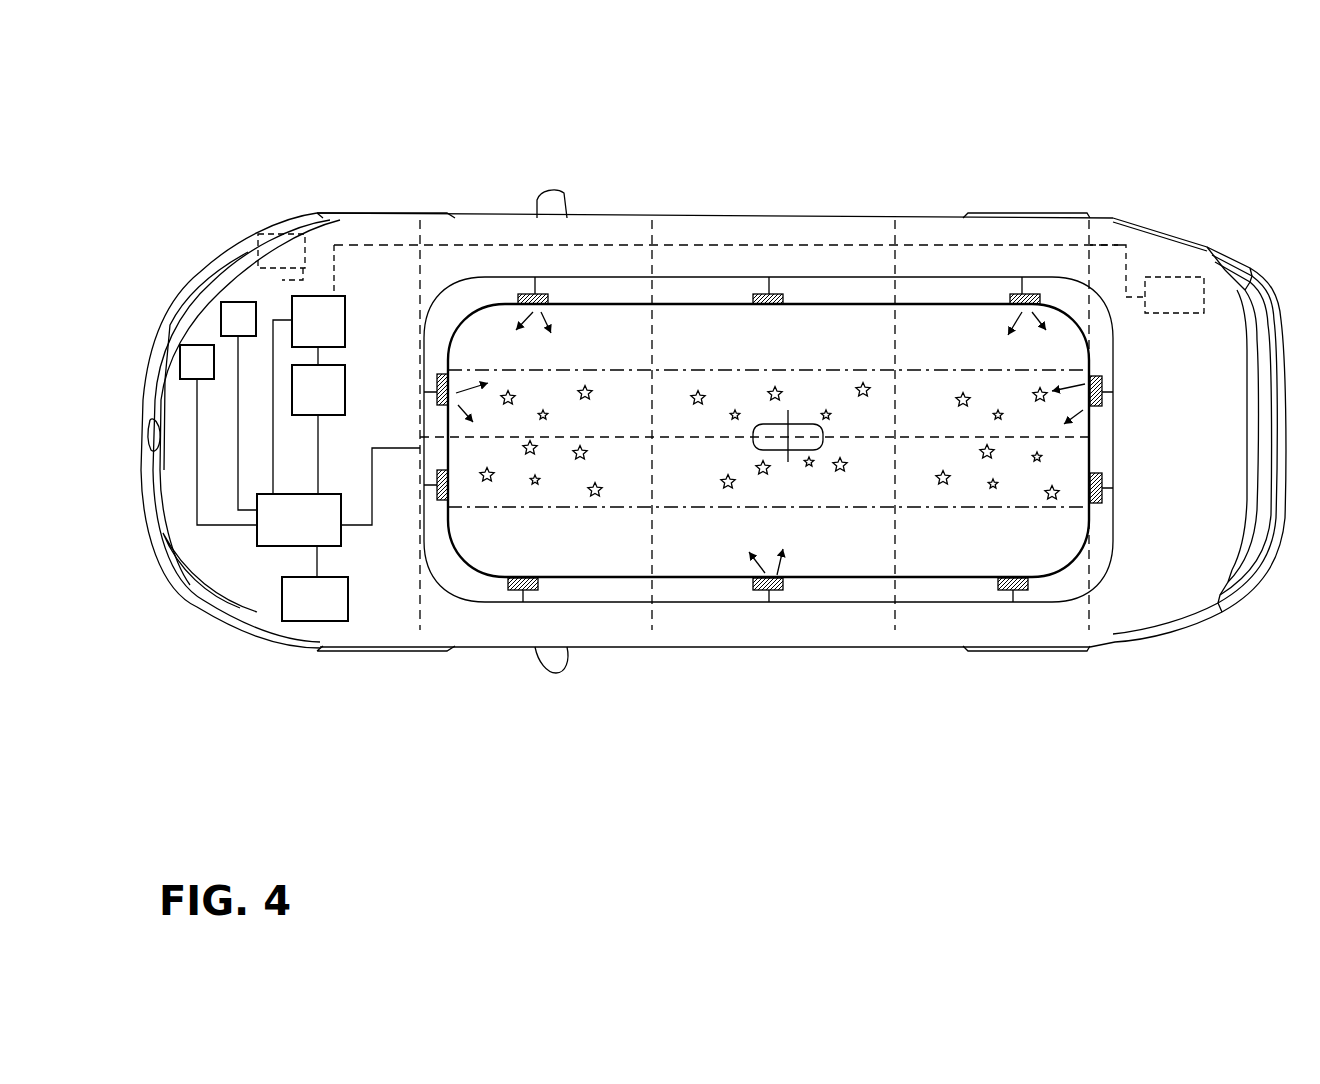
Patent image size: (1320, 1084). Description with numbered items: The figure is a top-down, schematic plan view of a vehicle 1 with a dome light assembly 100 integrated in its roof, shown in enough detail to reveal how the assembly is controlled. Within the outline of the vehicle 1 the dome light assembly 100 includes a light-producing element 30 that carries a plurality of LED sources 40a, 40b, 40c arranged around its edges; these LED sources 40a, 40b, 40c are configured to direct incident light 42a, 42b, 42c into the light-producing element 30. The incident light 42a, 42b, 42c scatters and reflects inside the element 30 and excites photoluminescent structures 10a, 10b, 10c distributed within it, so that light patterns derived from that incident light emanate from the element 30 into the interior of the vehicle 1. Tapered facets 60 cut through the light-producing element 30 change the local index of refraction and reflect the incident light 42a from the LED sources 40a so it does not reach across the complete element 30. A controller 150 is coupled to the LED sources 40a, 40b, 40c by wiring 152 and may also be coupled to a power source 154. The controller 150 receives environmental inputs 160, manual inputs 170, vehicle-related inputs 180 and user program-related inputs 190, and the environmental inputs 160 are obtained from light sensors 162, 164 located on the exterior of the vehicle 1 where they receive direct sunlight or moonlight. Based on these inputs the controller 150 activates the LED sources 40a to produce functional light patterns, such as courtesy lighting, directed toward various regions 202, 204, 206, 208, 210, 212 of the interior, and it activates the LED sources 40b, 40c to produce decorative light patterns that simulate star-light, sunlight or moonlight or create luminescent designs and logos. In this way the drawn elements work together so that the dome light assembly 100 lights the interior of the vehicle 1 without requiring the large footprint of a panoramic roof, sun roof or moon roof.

The vehicle 1 is at (1143, 267).
The dome light assembly 100 is at (612, 182).
The light-producing element 30 is at (827, 303).
The tapered facets 60 is at (931, 370).
The LED source 40a is at (538, 294).
The LED source 40b is at (448, 384).
The LED source 40c is at (1102, 385).
The incident light 42a is at (547, 323).
The incident light 42b is at (456, 412).
The incident light 42c is at (1067, 392).
The photoluminescent structure 10a is at (864, 394).
The photoluminescent structure 10b is at (1000, 415).
The photoluminescent structure 10c is at (763, 452).
The controller 150 is at (299, 520).
The wiring 152 is at (383, 449).
The power source 154 is at (315, 583).
The environmental inputs 160 is at (312, 313).
The light sensor 162 is at (296, 265).
The light sensor 164 is at (1174, 295).
The manual inputs 170 is at (197, 345).
The vehicle-related inputs 180 is at (237, 305).
The user program-related inputs 190 is at (330, 383).
The region 202 is at (445, 612).
The region 204 is at (520, 265).
The region 206 is at (722, 618).
The region 208 is at (865, 265).
The region 210 is at (1043, 620).
The region 212 is at (1068, 253).